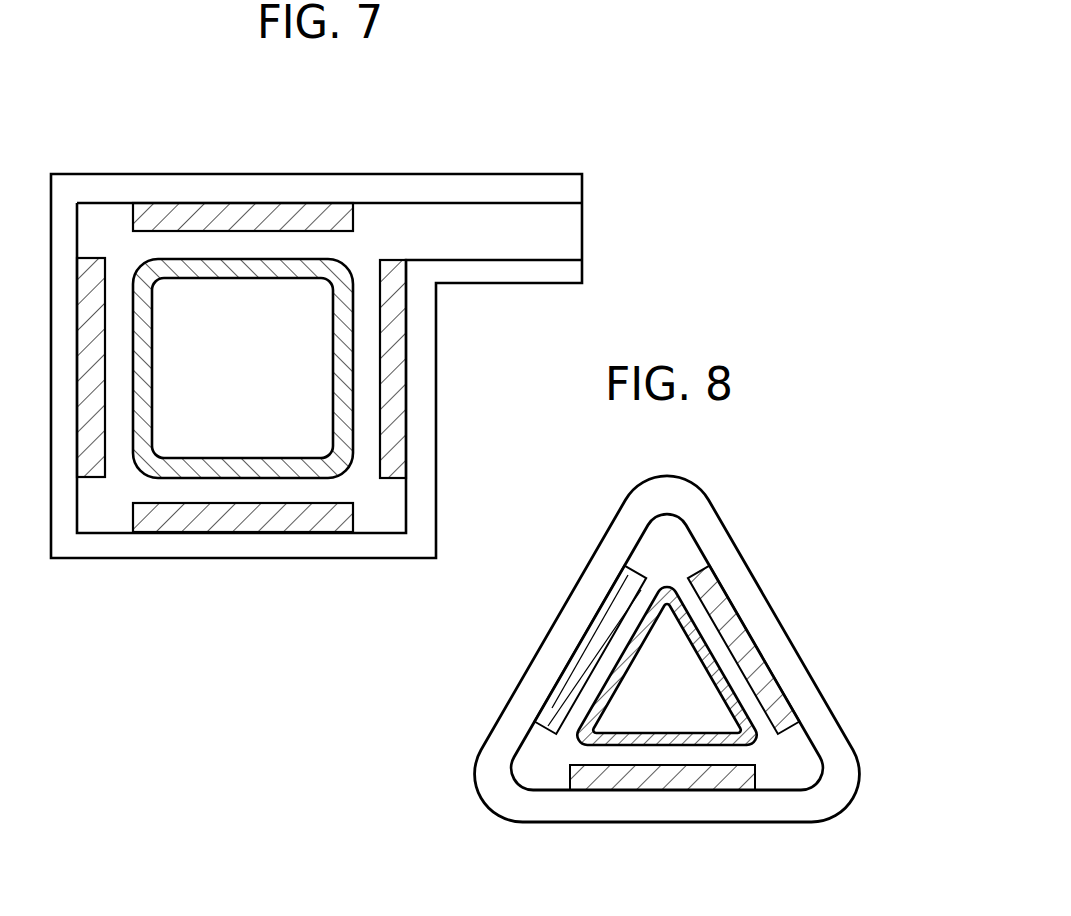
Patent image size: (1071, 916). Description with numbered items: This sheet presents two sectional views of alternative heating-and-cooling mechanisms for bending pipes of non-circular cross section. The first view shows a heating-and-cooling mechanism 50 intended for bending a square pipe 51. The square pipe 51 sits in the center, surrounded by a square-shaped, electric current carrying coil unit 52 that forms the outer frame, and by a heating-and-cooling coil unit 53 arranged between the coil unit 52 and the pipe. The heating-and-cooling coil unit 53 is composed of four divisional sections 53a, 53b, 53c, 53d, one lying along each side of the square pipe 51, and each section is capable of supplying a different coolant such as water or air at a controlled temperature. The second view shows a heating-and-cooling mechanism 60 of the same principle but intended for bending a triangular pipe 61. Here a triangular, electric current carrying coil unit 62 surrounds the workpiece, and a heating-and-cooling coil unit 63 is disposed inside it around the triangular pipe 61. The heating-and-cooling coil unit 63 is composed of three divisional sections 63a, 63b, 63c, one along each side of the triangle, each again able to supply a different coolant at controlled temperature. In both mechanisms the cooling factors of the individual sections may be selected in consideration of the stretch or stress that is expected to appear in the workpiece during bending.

In FIG. 7, the heating-and-cooling mechanism 50 is at (395, 135).
In FIG. 7, the square pipe 51 is at (345, 362).
In FIG. 7, the electric current carrying coil unit 52 is at (212, 169).
In FIG. 7, the heating-and-cooling coil unit 53 is at (328, 369).
In FIG. 7, the divisional section 53a is at (287, 215).
In FIG. 7, the divisional section 53b is at (402, 328).
In FIG. 7, the divisional section 53c is at (177, 520).
In FIG. 7, the divisional section 53d is at (95, 307).
In FIG. 8, the heating-and-cooling mechanism 60 is at (766, 510).
In FIG. 8, the triangular pipe 61 is at (718, 687).
In FIG. 8, the electric current carrying coil unit 62 is at (567, 613).
In FIG. 8, the heating-and-cooling coil unit 63 is at (651, 701).
In FIG. 8, the divisional section 63a is at (723, 610).
In FIG. 8, the divisional section 63b is at (673, 777).
In FIG. 8, the divisional section 63c is at (555, 683).